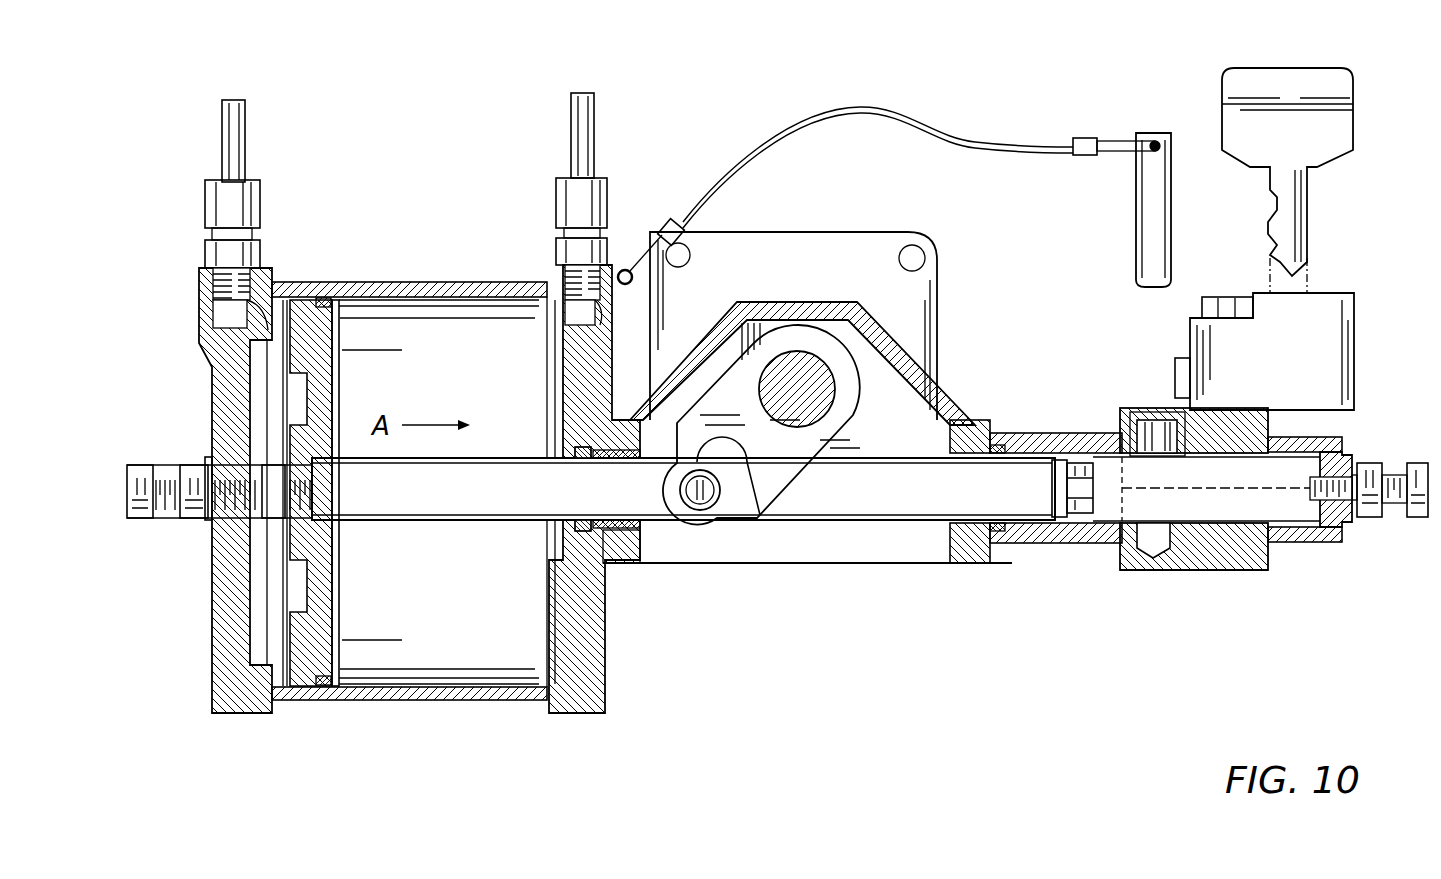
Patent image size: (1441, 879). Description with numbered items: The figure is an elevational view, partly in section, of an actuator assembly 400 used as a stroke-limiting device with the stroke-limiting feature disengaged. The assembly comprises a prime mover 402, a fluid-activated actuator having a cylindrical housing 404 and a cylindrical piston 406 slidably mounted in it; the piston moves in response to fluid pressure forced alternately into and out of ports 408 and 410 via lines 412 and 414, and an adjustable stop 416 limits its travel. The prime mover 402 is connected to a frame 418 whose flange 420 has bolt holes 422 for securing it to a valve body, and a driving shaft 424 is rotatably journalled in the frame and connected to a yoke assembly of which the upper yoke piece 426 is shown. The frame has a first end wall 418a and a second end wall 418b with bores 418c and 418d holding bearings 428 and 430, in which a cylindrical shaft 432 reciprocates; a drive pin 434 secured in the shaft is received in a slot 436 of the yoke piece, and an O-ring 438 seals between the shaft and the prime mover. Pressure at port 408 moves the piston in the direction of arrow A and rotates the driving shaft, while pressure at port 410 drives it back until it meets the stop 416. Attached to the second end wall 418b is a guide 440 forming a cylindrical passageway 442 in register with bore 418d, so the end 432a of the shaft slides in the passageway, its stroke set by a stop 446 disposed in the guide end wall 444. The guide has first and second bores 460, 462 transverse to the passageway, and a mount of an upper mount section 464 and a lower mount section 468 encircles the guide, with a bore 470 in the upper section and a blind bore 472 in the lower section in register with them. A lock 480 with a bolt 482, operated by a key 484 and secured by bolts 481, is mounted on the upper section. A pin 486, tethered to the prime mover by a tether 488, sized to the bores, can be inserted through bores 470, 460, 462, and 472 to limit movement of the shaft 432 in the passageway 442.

The actuator assembly 400 is at (852, 624).
The prime mover 402 is at (362, 268).
The cylindrical housing 404 is at (405, 700).
The cylindrical piston 406 is at (320, 376).
The port 408 is at (215, 318).
The port 410 is at (548, 298).
The line 412 is at (225, 120).
The line 414 is at (572, 118).
The adjustable stop 416 is at (184, 466).
The frame 418 is at (842, 285).
The first end wall 418a is at (633, 547).
The second end wall 418b is at (958, 553).
The bore 418c is at (620, 552).
The bore 418d is at (992, 540).
The flange 420 is at (793, 242).
The bolt holes 422 is at (916, 255).
The driving shaft 424 is at (815, 367).
The upper yoke piece 426 is at (790, 455).
The bearing 428 is at (585, 565).
The bearing 430 is at (963, 447).
The cylindrical shaft 432 is at (447, 510).
The end of shaft 432a is at (1037, 512).
The drive pin 434 is at (703, 503).
The slot 436 is at (733, 474).
The O-ring 438 is at (592, 538).
The guide 440 is at (1035, 430).
The cylindrical passageway 442 is at (1312, 445).
The end wall 444 is at (1329, 530).
The stop 446 is at (1370, 514).
The first bore 460 is at (1160, 437).
The second bore 462 is at (1165, 550).
The upper mount section 464 is at (1272, 420).
The lower mount section 468 is at (1250, 574).
The bore 470 is at (1142, 420).
The blind bore 472 is at (1153, 552).
The lock 480 is at (1336, 300).
The bolts 481 is at (1223, 298).
The bolt 482 is at (1181, 355).
The key 484 is at (1272, 82).
The pin 486 is at (1138, 218).
The tether 488 is at (836, 108).